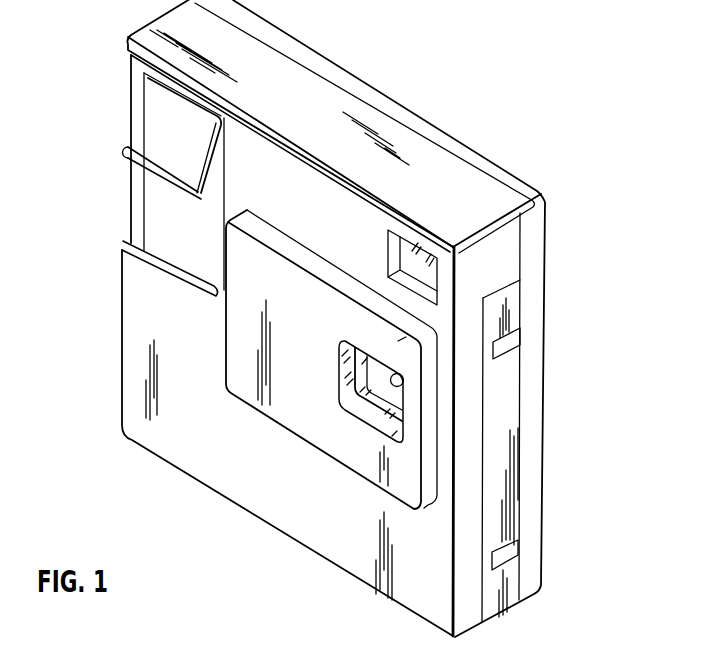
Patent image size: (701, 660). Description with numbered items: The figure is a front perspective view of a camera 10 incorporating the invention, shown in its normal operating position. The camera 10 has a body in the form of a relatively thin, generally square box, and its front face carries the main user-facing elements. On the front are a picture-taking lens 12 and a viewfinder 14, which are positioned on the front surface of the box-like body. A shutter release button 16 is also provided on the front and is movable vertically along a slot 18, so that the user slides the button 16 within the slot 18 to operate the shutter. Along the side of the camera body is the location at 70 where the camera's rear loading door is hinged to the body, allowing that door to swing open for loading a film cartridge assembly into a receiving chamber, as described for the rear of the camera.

The camera 10 is at (518, 152).
The picture-taking lens 12 is at (395, 387).
The viewfinder 14 is at (400, 252).
The shutter release button 16 is at (182, 138).
The slot 18 is at (225, 246).
The hinge 70 is at (517, 343).